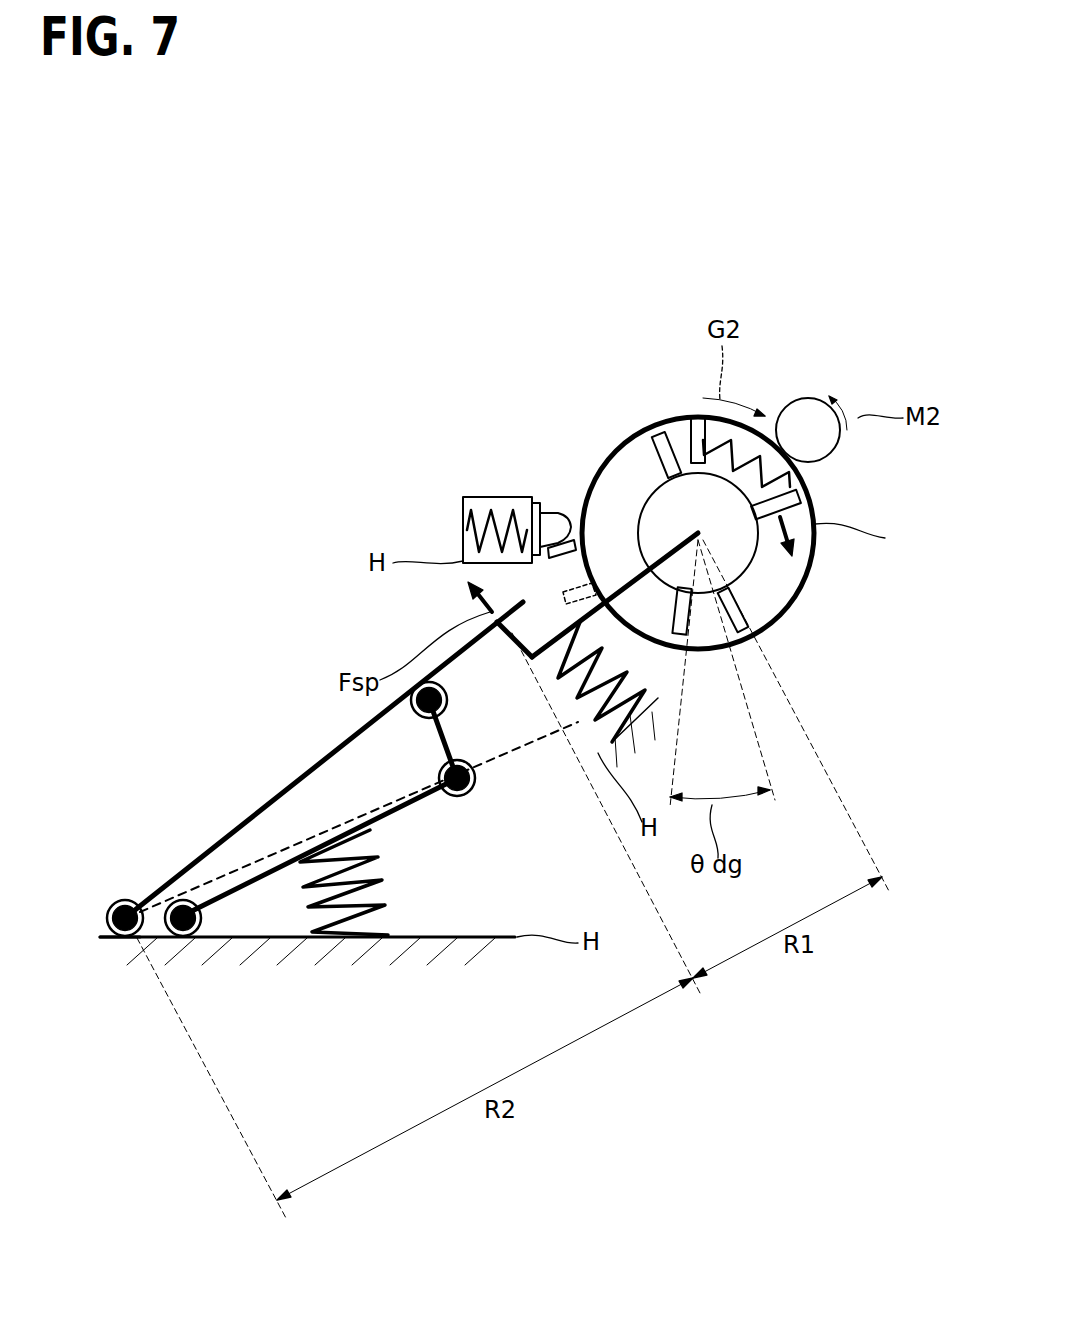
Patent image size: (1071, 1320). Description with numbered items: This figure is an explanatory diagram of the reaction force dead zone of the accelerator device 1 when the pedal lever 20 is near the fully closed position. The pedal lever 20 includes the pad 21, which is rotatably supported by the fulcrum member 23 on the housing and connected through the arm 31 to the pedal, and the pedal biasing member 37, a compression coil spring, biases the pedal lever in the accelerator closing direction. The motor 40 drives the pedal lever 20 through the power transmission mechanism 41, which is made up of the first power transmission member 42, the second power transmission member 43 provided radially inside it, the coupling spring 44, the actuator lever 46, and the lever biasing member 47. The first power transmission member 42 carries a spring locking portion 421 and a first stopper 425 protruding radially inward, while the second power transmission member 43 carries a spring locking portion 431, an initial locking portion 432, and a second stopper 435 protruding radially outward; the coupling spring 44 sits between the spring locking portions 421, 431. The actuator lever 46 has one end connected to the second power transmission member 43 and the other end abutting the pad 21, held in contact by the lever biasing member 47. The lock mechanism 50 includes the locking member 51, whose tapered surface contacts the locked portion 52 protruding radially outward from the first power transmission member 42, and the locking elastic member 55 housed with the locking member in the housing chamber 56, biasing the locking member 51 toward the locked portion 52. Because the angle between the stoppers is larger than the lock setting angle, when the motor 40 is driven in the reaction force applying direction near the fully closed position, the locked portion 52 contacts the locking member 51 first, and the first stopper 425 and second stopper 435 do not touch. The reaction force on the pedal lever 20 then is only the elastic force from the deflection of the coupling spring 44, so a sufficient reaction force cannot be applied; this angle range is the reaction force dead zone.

The accelerator device 1 is at (140, 1002).
The pedal lever 20 is at (207, 783).
The pad 21 is at (277, 797).
The fulcrum member 23 is at (127, 900).
The arm 31 is at (438, 778).
The pedal biasing member 37 is at (390, 912).
The motor 40 is at (808, 398).
The power transmission mechanism 41 is at (820, 600).
The first power transmission member 42 is at (810, 575).
The second power transmission member 43 is at (653, 513).
The coupling spring 44 is at (800, 480).
The actuator lever 46 is at (540, 655).
The lever biasing member 47 is at (593, 717).
The lock mechanism 50 is at (452, 505).
The locking member 51 is at (542, 515).
The locked portion 52 is at (571, 542).
The locking elastic member 55 is at (465, 497).
The housing chamber 56 is at (490, 500).
The spring locking portion 421 is at (697, 415).
The first stopper 425 is at (755, 630).
The spring locking portion 431 is at (805, 505).
The initial locking portion 432 is at (660, 417).
The second stopper 435 is at (686, 636).